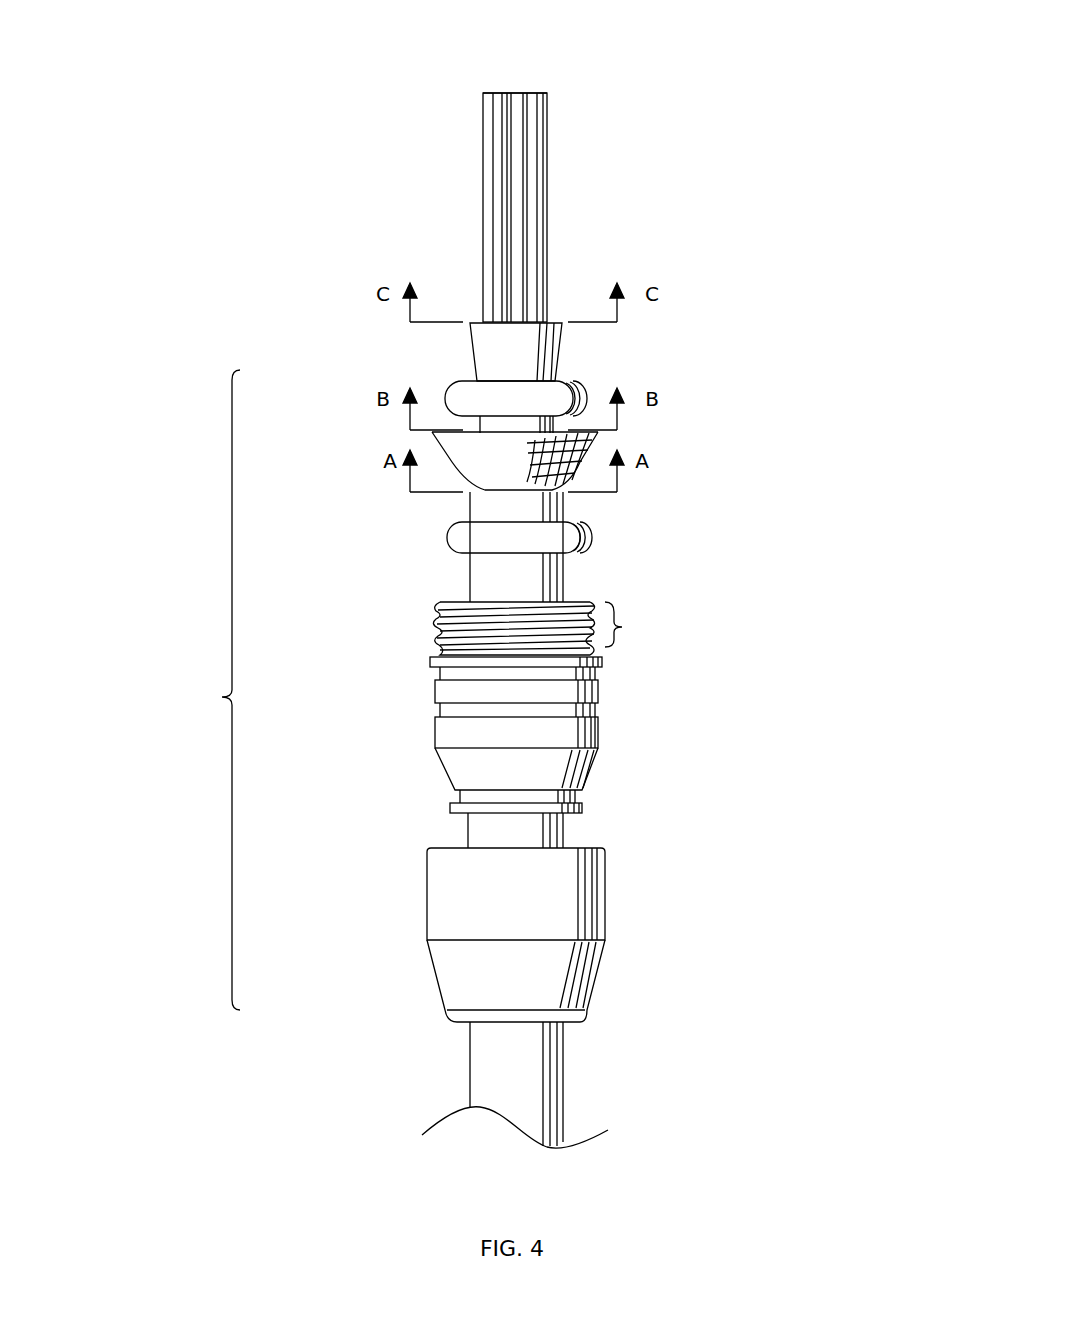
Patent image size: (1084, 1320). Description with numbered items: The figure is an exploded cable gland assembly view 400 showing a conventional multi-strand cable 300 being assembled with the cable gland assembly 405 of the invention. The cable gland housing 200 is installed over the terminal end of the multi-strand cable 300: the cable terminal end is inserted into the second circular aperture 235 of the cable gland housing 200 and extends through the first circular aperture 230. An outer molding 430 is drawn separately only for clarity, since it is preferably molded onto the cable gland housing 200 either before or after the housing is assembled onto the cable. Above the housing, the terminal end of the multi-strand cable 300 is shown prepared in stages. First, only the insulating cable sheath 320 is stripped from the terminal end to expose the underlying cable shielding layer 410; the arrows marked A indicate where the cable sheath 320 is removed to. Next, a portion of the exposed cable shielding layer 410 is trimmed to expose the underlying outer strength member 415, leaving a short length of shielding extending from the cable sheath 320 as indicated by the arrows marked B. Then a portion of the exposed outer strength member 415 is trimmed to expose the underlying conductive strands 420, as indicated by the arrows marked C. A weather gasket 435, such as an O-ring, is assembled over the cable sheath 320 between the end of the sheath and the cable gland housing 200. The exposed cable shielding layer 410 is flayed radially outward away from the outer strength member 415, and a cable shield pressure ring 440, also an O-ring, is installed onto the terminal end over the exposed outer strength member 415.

The exploded cable gland assembly view 400 is at (244, 118).
The cable gland assembly 405 is at (222, 697).
The conductive strands 420 is at (548, 236).
The outer strength member 415 is at (560, 360).
The cable shield pressure ring 440 is at (586, 395).
The cable shielding layer 410 is at (453, 448).
The weather gasket 435 is at (587, 535).
The cable sheath 320 is at (563, 590).
The first circular aperture 230 is at (450, 600).
The cable gland housing 200 is at (433, 730).
The second circular aperture 235 is at (462, 813).
The outer molding 430 is at (572, 903).
The multi-strand cable 300 is at (401, 1050).